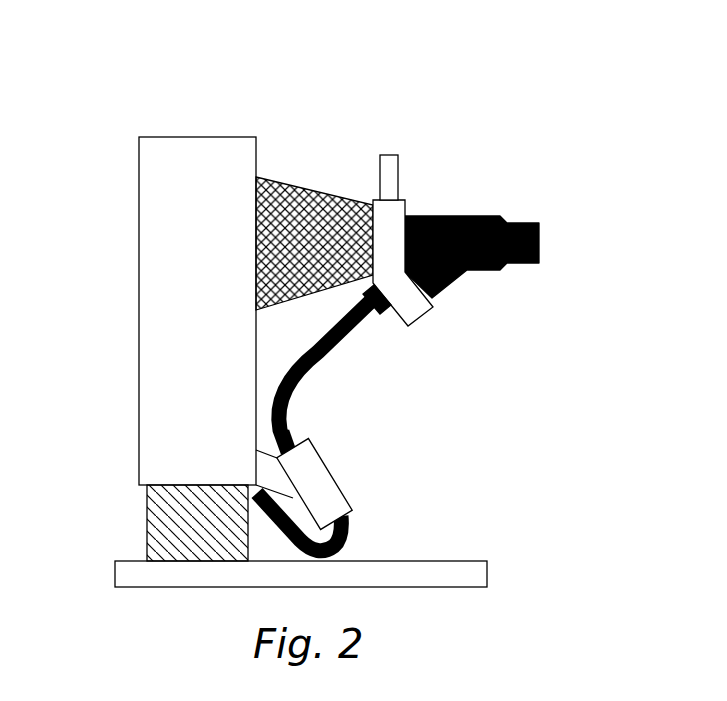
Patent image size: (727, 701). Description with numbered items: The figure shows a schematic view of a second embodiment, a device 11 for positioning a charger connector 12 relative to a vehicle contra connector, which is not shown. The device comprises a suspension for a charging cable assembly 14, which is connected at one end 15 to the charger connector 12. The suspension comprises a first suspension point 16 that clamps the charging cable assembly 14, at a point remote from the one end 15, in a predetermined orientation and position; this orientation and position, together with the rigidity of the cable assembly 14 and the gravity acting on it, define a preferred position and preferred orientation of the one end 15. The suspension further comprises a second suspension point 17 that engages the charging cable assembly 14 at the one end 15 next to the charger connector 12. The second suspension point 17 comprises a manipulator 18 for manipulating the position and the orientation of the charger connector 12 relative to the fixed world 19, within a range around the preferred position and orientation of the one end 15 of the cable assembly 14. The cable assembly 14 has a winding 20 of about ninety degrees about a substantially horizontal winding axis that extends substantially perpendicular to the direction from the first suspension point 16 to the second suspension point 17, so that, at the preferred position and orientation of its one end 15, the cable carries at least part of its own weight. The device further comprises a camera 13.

The device 11 is at (553, 102).
The charger connector 12 is at (555, 239).
The camera 13 is at (414, 161).
The charging cable assembly 14 is at (306, 422).
The one end 15 is at (393, 331).
The first suspension point 16 is at (354, 479).
The second suspension point 17 is at (435, 324).
The manipulator 18 is at (313, 168).
The fixed world 19 is at (103, 576).
The winding 20 is at (340, 362).